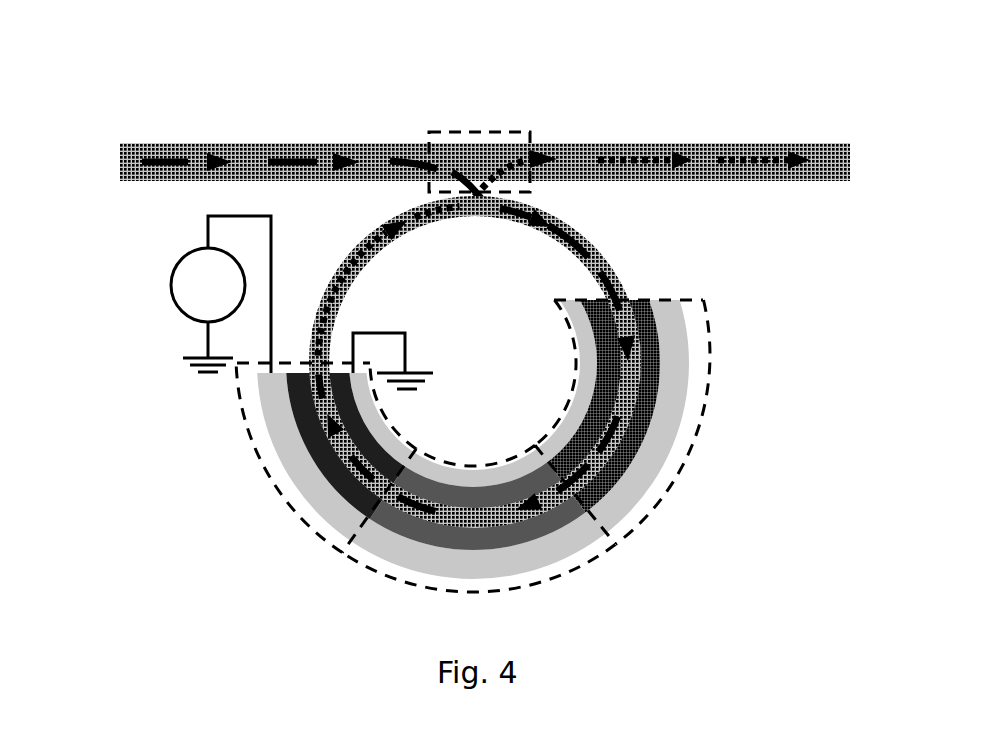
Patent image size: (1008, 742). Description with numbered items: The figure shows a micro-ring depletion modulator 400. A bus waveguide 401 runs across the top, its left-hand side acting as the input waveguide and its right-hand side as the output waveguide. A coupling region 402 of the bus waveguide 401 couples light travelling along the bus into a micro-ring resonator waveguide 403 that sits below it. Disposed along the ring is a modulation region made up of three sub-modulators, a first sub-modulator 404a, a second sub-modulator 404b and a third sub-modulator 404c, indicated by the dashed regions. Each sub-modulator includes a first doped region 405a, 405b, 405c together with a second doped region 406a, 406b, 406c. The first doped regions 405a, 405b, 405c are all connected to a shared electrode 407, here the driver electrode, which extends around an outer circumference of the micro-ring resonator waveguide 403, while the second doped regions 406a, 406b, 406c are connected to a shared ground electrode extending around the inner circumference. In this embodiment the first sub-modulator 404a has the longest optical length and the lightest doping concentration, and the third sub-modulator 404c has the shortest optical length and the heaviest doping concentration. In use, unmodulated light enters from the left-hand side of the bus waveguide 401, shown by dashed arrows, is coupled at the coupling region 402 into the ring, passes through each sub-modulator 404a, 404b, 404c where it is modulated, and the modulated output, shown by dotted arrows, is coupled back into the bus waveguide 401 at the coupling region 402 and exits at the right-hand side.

The micro-ring depletion modulator 400 is at (138, 88).
The bus waveguide 401 is at (378, 148).
The coupling region 402 is at (500, 130).
The micro-ring resonator waveguide 403 is at (600, 257).
The first sub-modulator 404a is at (688, 468).
The second sub-modulator 404b is at (383, 570).
The third sub-modulator 404c is at (313, 533).
The first doped region 405a is at (647, 320).
The first doped region 405b is at (560, 517).
The first doped region 405c is at (330, 468).
The second doped region 406a is at (617, 323).
The second doped region 406b is at (532, 492).
The second doped region 406c is at (345, 461).
The shared electrode 407 is at (587, 378).